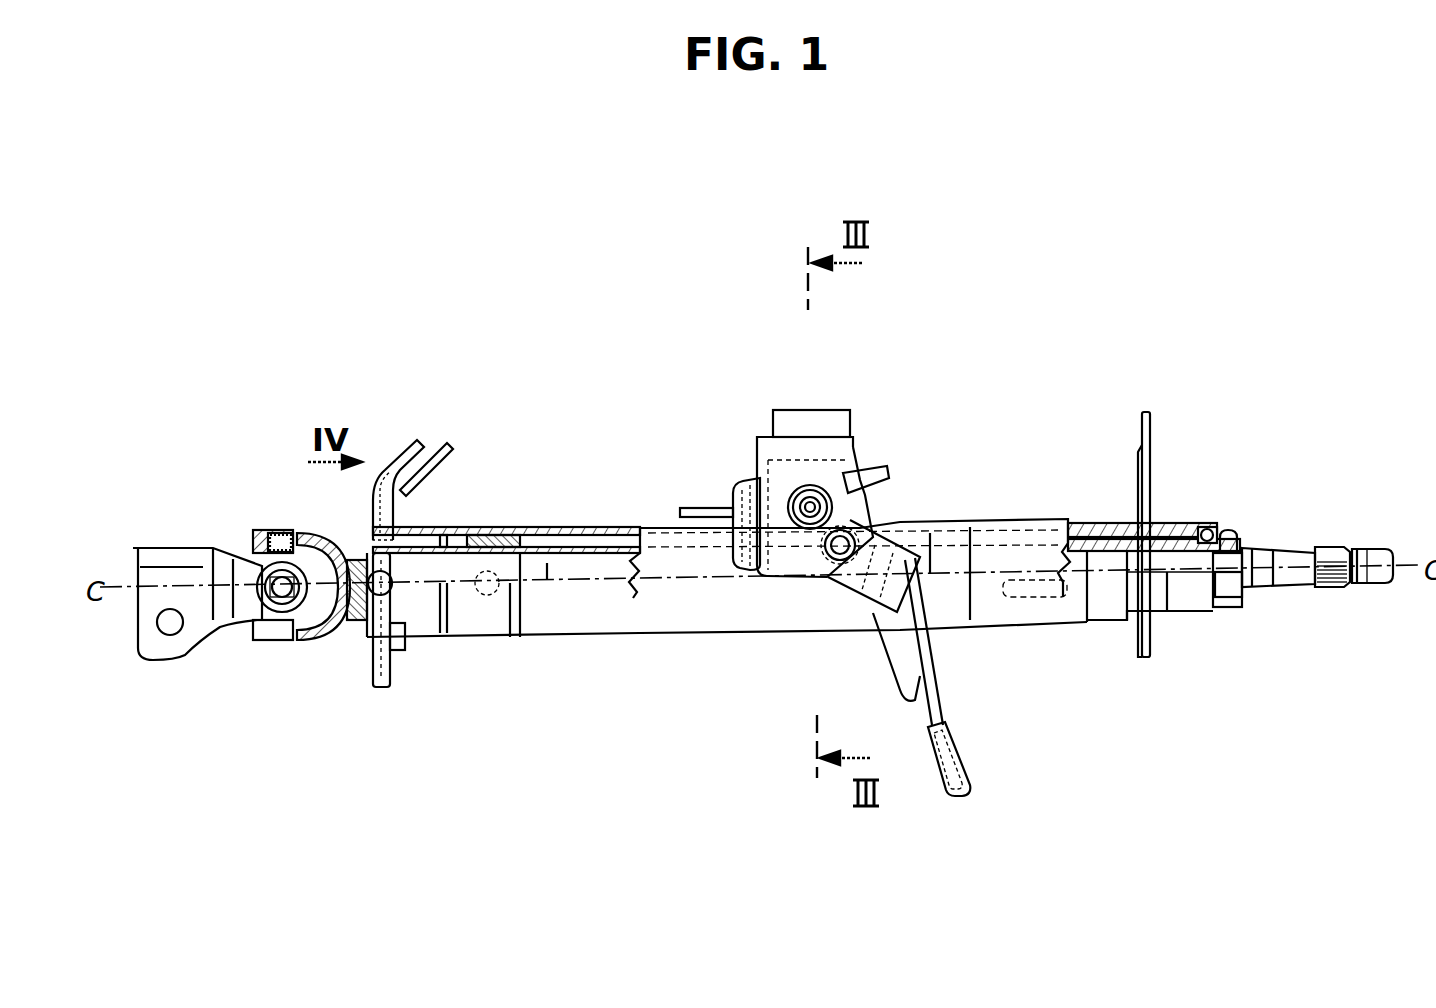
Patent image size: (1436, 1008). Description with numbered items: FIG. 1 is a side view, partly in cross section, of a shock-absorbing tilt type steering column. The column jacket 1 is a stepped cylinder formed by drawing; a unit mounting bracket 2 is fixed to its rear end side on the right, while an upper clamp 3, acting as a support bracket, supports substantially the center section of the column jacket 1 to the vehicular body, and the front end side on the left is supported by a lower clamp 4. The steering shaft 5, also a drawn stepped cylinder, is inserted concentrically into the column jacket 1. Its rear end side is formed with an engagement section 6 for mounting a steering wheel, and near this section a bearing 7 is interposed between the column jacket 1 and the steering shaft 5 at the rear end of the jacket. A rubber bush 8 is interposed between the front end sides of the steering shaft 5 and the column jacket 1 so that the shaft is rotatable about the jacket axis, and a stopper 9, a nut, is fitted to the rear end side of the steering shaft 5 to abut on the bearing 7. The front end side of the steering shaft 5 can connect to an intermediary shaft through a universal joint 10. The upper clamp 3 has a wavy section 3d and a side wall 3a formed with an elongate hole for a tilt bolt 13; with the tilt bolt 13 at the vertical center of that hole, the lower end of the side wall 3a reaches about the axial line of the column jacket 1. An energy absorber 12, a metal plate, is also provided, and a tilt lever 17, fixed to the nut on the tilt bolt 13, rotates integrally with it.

The column jacket 1 is at (560, 640).
The unit mounting bracket 2 is at (1150, 412).
The upper clamp 3 is at (839, 515).
The side wall 3a is at (790, 578).
The wavy section 3d is at (810, 417).
The lower clamp 4 is at (445, 430).
The steering shaft 5 is at (1295, 548).
The engagement section 6 is at (1335, 595).
The bearing 7 is at (1206, 526).
The rubber bush 8 is at (492, 527).
The stopper 9 is at (1229, 529).
The universal joint 10 is at (261, 511).
The energy absorber 12 is at (701, 505).
The tilt bolt 13 is at (841, 490).
The tilt lever 17 is at (933, 673).